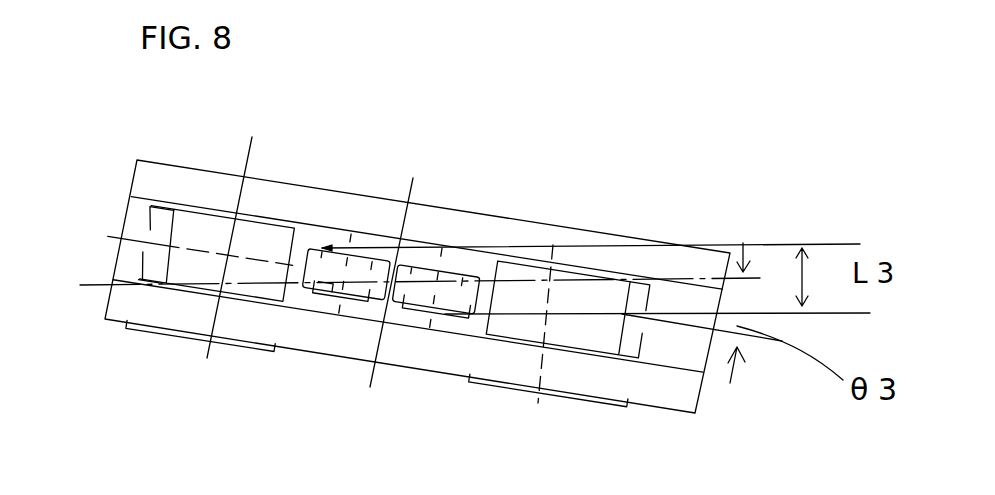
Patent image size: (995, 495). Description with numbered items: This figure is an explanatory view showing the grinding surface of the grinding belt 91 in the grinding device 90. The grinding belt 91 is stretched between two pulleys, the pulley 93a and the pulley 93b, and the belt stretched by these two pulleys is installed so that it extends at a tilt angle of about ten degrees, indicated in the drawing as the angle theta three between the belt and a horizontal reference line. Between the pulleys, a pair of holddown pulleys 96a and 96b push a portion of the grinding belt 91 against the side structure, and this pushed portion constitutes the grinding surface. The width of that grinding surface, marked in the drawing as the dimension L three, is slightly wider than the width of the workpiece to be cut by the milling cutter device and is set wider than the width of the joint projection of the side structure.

The grinding device 90 is at (343, 128).
The grinding belt 91 is at (147, 227).
The pulley 93a is at (612, 342).
The pulley 93b is at (280, 292).
The holddown pulley 96a is at (478, 272).
The holddown pulley 96b is at (391, 260).